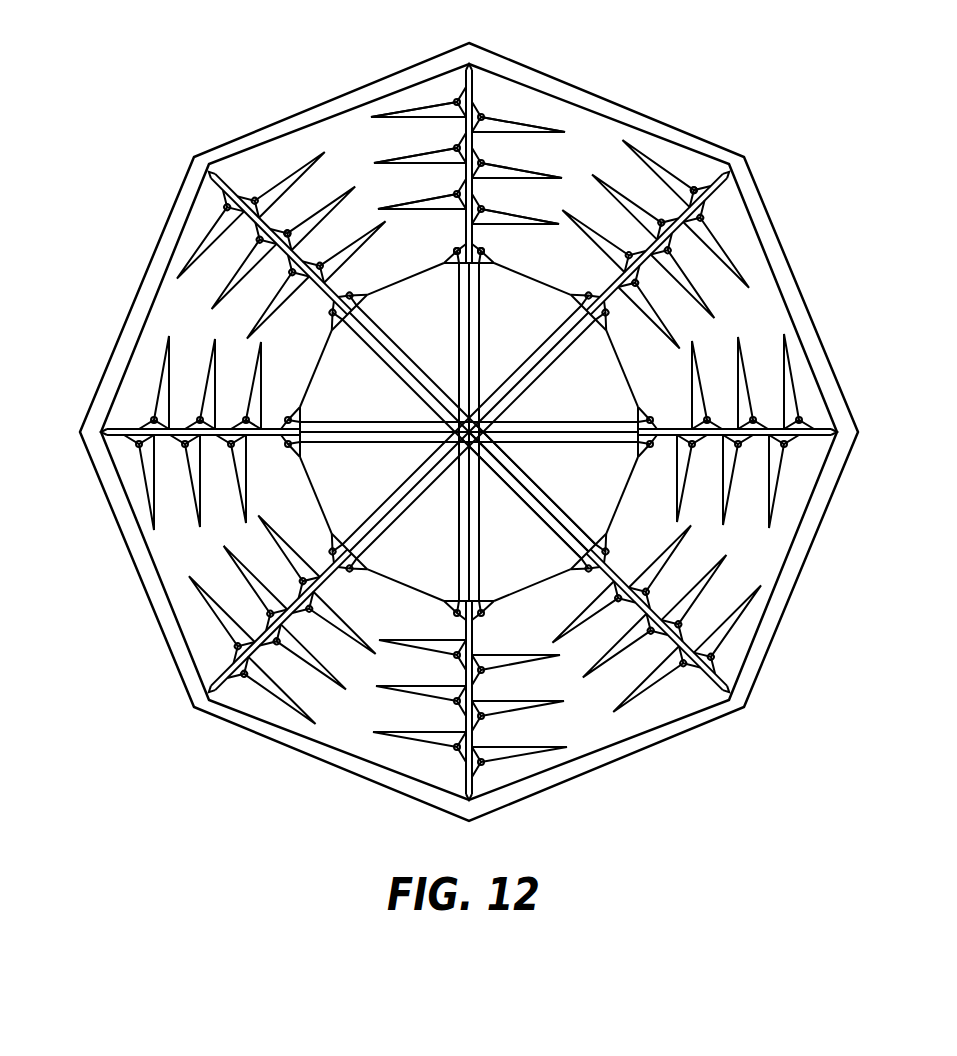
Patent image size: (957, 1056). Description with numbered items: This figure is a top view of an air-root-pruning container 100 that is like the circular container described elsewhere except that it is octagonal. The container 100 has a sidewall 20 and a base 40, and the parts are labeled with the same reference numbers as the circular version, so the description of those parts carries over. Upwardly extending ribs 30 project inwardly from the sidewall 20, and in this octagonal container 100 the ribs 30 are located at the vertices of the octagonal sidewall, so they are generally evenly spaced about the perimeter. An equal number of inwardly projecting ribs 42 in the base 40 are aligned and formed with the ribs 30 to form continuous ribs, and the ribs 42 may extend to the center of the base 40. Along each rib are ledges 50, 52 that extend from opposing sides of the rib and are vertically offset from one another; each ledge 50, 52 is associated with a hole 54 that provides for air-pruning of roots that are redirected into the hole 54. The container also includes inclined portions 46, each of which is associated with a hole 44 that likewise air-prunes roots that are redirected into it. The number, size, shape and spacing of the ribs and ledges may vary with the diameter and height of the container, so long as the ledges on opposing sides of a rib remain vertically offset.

The air-root-pruning container 100 is at (290, 52).
The sidewall 20 is at (597, 138).
The rib 30 is at (462, 52).
The base 40 is at (527, 560).
The rib 42 is at (544, 504).
The hole 44 is at (488, 256).
The inclined portion 46 is at (455, 265).
The ledge 50 is at (430, 197).
The ledge 52 is at (523, 213).
The hole 54 is at (292, 232).